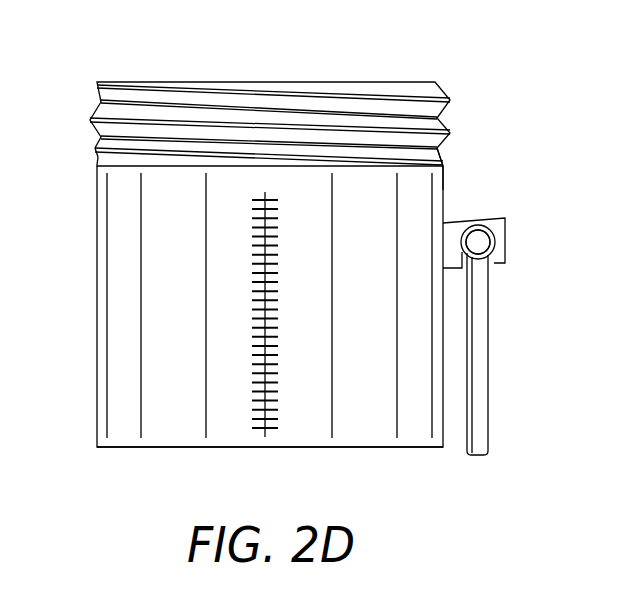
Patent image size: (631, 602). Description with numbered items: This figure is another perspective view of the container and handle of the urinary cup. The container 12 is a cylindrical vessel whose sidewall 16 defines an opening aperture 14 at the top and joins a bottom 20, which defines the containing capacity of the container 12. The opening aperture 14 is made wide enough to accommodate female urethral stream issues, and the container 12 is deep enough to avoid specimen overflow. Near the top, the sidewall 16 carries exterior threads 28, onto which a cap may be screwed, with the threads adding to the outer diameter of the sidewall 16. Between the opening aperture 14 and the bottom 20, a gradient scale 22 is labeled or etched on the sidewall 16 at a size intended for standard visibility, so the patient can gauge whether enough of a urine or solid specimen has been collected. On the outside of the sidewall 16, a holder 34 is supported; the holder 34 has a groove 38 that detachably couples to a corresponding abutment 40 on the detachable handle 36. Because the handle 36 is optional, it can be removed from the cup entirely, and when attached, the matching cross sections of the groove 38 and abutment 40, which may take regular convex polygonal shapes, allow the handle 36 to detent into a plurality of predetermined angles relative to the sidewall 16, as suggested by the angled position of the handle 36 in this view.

The container 12 is at (96, 258).
The opening aperture 14 is at (288, 261).
The sidewall 16 is at (444, 185).
The bottom 20 is at (398, 447).
The gradient scale 22 is at (257, 310).
The exterior threads 28 is at (90, 120).
The holder 34 is at (467, 222).
The detachable handle 36 is at (488, 345).
The groove 38 is at (489, 223).
The abutment 40 is at (478, 243).